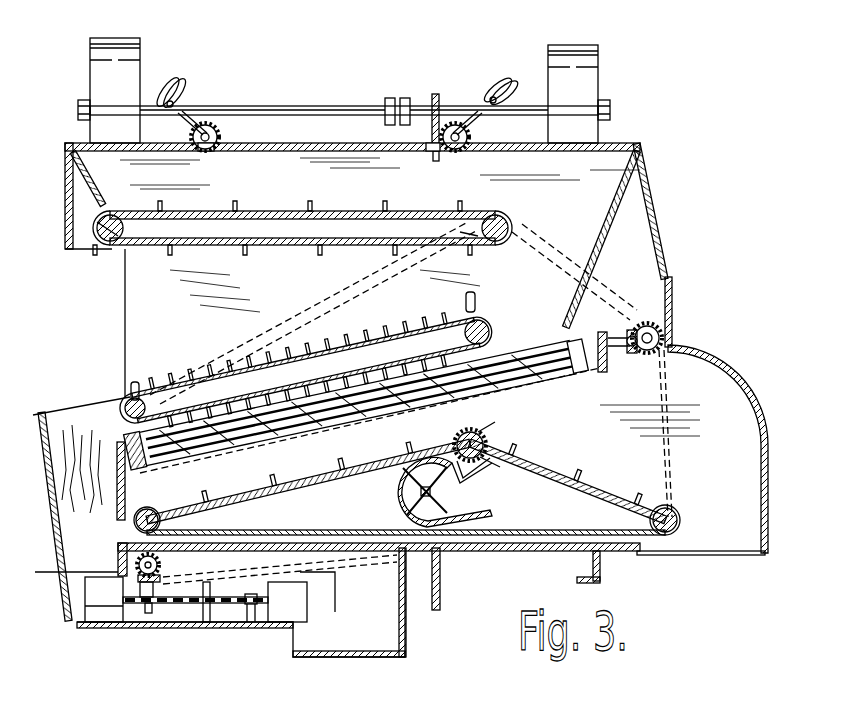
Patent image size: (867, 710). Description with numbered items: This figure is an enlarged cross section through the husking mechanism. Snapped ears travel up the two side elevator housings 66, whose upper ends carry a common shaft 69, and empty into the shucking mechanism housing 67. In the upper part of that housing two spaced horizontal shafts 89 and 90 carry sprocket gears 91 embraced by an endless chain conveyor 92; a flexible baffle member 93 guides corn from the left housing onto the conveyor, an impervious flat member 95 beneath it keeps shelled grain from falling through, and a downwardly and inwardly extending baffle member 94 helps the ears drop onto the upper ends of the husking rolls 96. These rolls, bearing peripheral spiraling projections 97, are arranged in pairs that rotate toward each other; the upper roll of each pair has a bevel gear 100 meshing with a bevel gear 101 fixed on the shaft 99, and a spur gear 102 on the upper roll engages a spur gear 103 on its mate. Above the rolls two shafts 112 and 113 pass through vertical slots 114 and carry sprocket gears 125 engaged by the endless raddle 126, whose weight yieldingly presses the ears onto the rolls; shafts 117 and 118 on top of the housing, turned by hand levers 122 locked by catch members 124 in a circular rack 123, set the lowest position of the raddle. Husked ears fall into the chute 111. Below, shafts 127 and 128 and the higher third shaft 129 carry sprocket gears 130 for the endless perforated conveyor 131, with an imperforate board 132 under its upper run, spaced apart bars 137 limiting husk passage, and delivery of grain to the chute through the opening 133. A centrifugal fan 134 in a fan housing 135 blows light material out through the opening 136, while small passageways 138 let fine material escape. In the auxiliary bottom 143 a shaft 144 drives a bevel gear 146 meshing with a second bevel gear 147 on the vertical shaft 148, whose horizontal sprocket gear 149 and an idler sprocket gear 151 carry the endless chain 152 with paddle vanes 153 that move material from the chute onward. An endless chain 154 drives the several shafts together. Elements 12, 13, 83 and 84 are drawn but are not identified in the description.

The frame 12 is at (48, 605).
The frame wall 13 is at (118, 552).
The elevator housing 66 is at (344, 90).
The shucking mechanism housing 67 is at (658, 205).
The common shaft 69 is at (303, 110).
The rod 83 is at (436, 152).
The rod 84 is at (439, 104).
The shaft 89 is at (112, 216).
The shaft 90 is at (503, 218).
The sprocket gears 91 is at (120, 230).
The endless chain conveyor 92 is at (258, 216).
The flexible baffle member 93 is at (90, 185).
The baffle member 94 is at (600, 255).
The impervious flat member 95 is at (352, 232).
The husking rolls 96 is at (530, 378).
The peripheral spiraling projections 97 is at (232, 425).
The shaft 99 is at (676, 332).
The bevel gear 100 is at (630, 330).
The bevel gear 101 is at (647, 323).
The spur gear 102 is at (612, 366).
The spur gear 103 is at (602, 332).
The chute 111 is at (72, 425).
The shaft 112 is at (148, 408).
The shaft 113 is at (496, 325).
The vertical slots 114 is at (138, 380).
The shaft 117 is at (220, 135).
The shaft 118 is at (470, 137).
The hand levers 122 is at (160, 92).
The circular rack 123 is at (214, 150).
The catch members 124 is at (180, 120).
The sprocket gears 125 is at (150, 392).
The endless raddle 126 is at (352, 345).
The shaft 127 is at (160, 520).
The shaft 128 is at (676, 520).
The third shaft 129 is at (480, 440).
The sprocket gears 130 is at (472, 432).
The endless perforated conveyor 131 is at (300, 478).
The imperforate board 132 is at (293, 480).
The opening 133 is at (118, 515).
The centrifugal fan 134 is at (438, 495).
The fan housing 135 is at (390, 516).
The opening 136 is at (738, 560).
The spaced apart bars 137 is at (550, 472).
The small passageways 138 is at (476, 553).
The auxiliary bottom 143 is at (190, 628).
The shaft 144 is at (159, 563).
The bevel gear 146 is at (160, 579).
The second bevel gear 147 is at (128, 580).
The vertical shaft 148 is at (152, 608).
The horizontal sprocket gear 149 is at (126, 604).
The idler sprocket gear 151 is at (250, 594).
The endless chain 152 is at (210, 596).
The paddle vanes 153 is at (95, 624).
The endless chain 154 is at (290, 325).